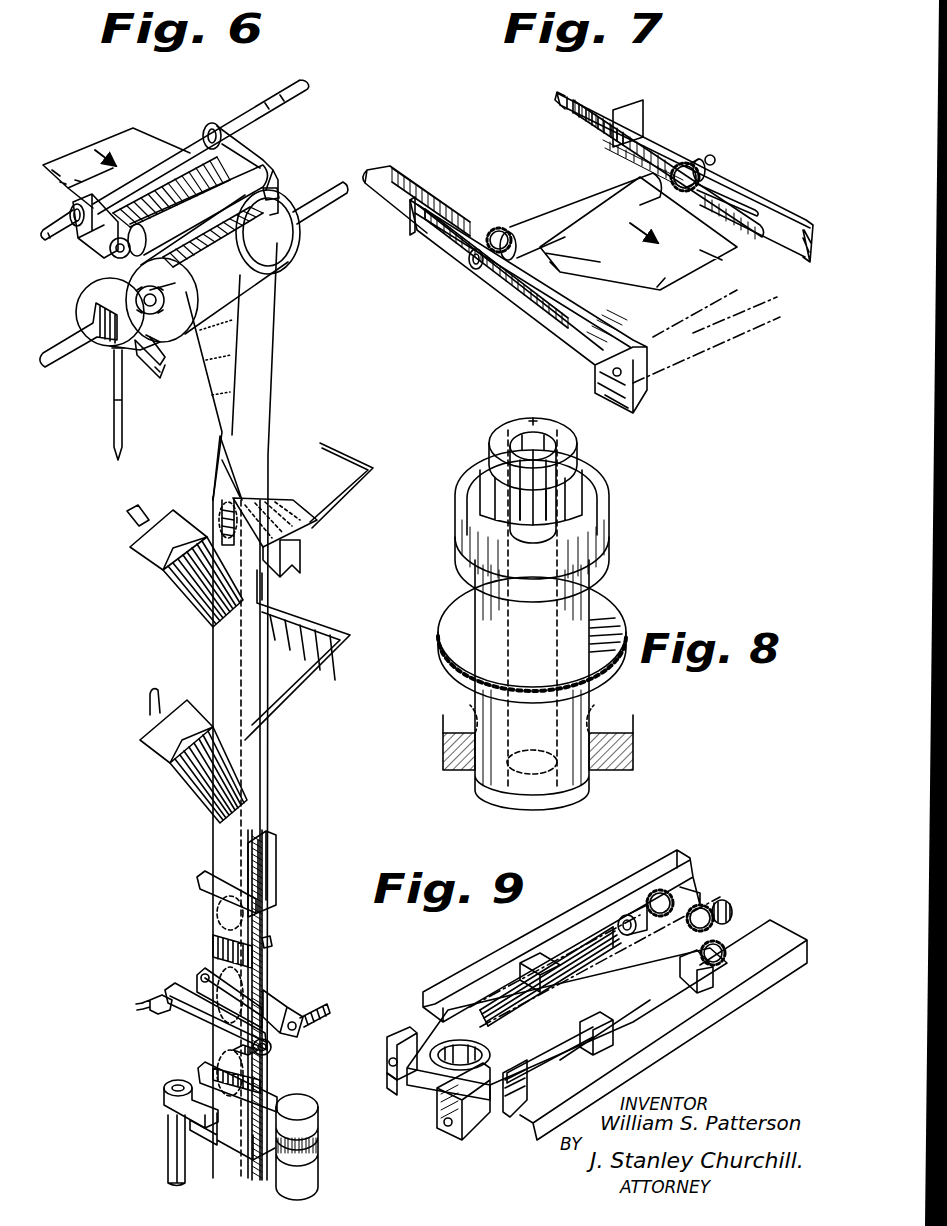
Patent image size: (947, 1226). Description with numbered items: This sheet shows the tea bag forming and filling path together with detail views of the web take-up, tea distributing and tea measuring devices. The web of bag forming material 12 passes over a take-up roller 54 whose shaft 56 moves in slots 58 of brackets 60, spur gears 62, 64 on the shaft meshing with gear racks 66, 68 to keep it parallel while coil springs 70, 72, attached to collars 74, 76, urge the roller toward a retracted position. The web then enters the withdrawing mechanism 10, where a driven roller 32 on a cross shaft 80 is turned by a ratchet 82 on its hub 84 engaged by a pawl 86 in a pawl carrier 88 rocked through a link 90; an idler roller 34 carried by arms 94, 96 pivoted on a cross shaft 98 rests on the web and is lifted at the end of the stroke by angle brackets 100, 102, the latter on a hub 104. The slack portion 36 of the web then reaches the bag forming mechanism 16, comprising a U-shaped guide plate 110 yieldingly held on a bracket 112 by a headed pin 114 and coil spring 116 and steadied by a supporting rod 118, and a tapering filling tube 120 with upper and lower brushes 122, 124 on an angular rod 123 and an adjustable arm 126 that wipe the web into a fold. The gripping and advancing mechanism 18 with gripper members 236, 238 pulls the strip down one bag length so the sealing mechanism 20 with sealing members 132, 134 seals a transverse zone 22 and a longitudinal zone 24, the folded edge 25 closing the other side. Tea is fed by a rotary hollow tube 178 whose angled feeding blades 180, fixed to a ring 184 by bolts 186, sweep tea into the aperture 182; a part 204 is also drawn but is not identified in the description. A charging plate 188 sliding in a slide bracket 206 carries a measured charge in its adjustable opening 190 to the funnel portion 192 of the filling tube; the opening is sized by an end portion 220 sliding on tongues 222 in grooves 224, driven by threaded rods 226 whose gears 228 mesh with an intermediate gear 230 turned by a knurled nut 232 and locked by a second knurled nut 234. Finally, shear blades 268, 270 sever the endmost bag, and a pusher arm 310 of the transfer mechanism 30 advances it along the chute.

In FIG. 6, the web withdrawing mechanism 10 is at (308, 141).
In FIG. 6, the web of bag forming material 12 is at (148, 114).
In FIG. 7, the web of bag forming material 12 is at (630, 260).
In FIG. 6, the bag forming mechanism 16 is at (143, 631).
In FIG. 6, the gripping and advancing mechanism 18 is at (157, 968).
In FIG. 6, the bag sealing mechanism 20 is at (305, 844).
In FIG. 6, the transverse zone 22 is at (213, 945).
In FIG. 6, the longitudinal zone 24 is at (258, 930).
In FIG. 6, the folded edge 25 is at (212, 912).
In FIG. 6, the transfer mechanism 30 is at (145, 1127).
In FIG. 6, the driven roller 32 is at (188, 362).
In FIG. 6, the idler roller 34 is at (318, 108).
In FIG. 6, the slack portion of web 36 is at (254, 374).
In FIG. 7, the take-up roller 54 is at (537, 228).
In FIG. 7, the roller shaft 56 is at (468, 262).
In FIG. 7, the slots 58 is at (640, 128).
In FIG. 7, the brackets 60 is at (767, 208).
In FIG. 7, the spur gear 62 is at (692, 165).
In FIG. 7, the spur gear 64 is at (497, 232).
In FIG. 7, the gear rack 66 is at (758, 226).
In FIG. 7, the gear rack 68 is at (497, 277).
In FIG. 7, the coil spring 70 is at (577, 98).
In FIG. 7, the coil spring 72 is at (432, 158).
In FIG. 7, the collar 74 is at (690, 165).
In FIG. 7, the collar 76 is at (510, 235).
In FIG. 6, the cross shaft 80 is at (88, 350).
In FIG. 6, the ratchet 82 is at (167, 280).
In FIG. 6, the hub 84 is at (140, 292).
In FIG. 6, the pawl 86 is at (180, 278).
In FIG. 6, the pawl carrier 88 is at (90, 295).
In FIG. 6, the link 90 is at (113, 440).
In FIG. 6, the arm 94 is at (91, 200).
In FIG. 6, the arm 96 is at (236, 150).
In FIG. 6, the cross shaft 98 is at (178, 160).
In FIG. 6, the angle bracket 100 is at (113, 262).
In FIG. 6, the angle bracket 102 is at (281, 184).
In FIG. 6, the hub 104 is at (302, 241).
In FIG. 6, the guide plate 110 is at (277, 503).
In FIG. 6, the bracket 112 is at (302, 557).
In FIG. 6, the headed pin 114 is at (217, 466).
In FIG. 6, the coil spring 116 is at (215, 503).
In FIG. 6, the supporting rod 118 is at (348, 500).
In FIG. 6, the filling tube 120 is at (212, 670).
In FIG. 6, the upper brush 122 is at (200, 577).
In FIG. 6, the angular rod 123 is at (128, 518).
In FIG. 6, the lower brush 124 is at (187, 777).
In FIG. 6, the arm 126 is at (150, 706).
In FIG. 6, the heated sealing member 132 is at (272, 864).
In FIG. 6, the cooperating sealing member 134 is at (244, 876).
In FIG. 8, the hollow tube 178 is at (590, 572).
In FIG. 8, the feeding blades 180 is at (575, 490).
In FIG. 8, the aperture 182 is at (480, 525).
In FIG. 8, the ring 184 is at (575, 437).
In FIG. 8, the bolts 186 is at (475, 470).
In FIG. 9, the charging plate 188 is at (567, 1022).
In FIG. 9, the adjustable opening 190 is at (472, 1043).
In FIG. 6, the funnel portion 192 is at (298, 650).
In FIG. 8, the gear flange 204 is at (625, 622).
In FIG. 9, the slide bracket 206 is at (700, 1012).
In FIG. 9, the end portion 220 is at (405, 1092).
In FIG. 9, the tongues 222 is at (392, 1038).
In FIG. 9, the grooves 224 is at (440, 1075).
In FIG. 9, the threaded rods 226 is at (480, 1005).
In FIG. 9, the gears 228 is at (650, 905).
In FIG. 9, the intermediate gear 230 is at (700, 905).
In FIG. 9, the knurled nut 232 is at (735, 912).
In FIG. 9, the second knurled nut 234 is at (712, 910).
In FIG. 6, the gripper member 236 is at (200, 1011).
In FIG. 6, the gripper member 238 is at (302, 1006).
In FIG. 6, the upper shear blade 268 is at (267, 1090).
In FIG. 6, the lower shear blade 270 is at (197, 1070).
In FIG. 6, the pusher arm 310 is at (210, 1135).